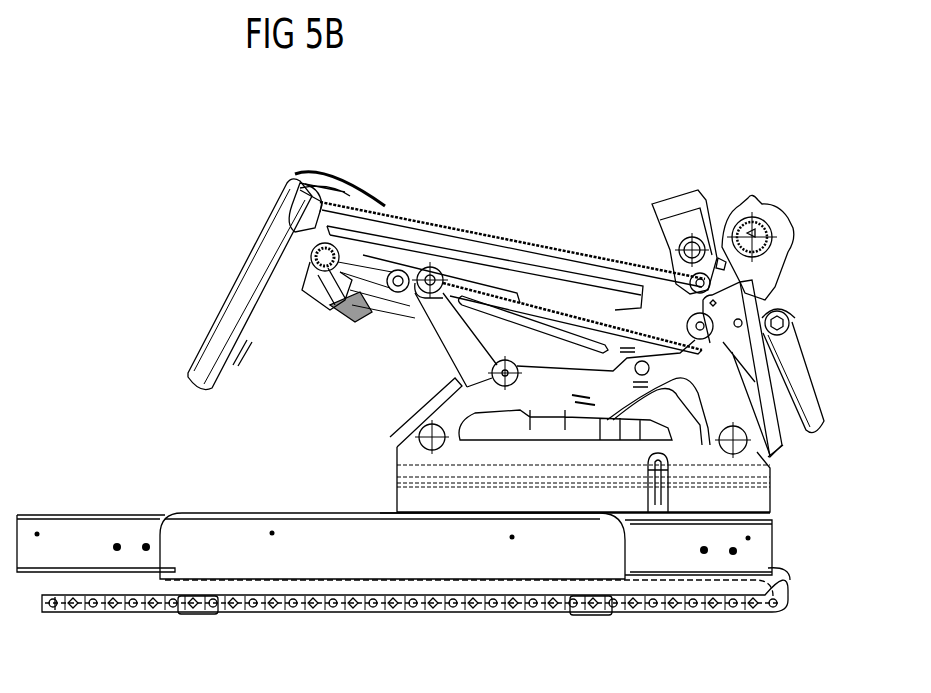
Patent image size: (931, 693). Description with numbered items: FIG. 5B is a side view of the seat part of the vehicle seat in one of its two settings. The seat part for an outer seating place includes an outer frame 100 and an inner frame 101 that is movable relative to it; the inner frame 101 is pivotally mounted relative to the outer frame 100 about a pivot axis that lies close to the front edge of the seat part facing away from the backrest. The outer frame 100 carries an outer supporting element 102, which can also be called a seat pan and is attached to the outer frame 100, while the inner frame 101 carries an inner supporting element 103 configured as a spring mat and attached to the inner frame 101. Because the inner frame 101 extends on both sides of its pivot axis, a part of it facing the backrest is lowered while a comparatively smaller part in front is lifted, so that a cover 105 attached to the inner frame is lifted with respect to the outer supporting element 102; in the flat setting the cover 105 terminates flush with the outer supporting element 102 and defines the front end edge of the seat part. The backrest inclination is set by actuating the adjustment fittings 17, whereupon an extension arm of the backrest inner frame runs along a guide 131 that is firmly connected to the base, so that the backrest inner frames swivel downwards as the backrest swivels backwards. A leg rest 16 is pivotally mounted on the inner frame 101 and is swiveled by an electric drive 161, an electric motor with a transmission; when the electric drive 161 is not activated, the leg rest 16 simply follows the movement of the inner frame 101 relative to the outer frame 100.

The leg rest 16 is at (222, 302).
The adjustment fitting 17 is at (763, 205).
The outer frame 100 is at (500, 280).
The inner frame 101 is at (563, 333).
The outer supporting element 102 is at (420, 217).
The inner supporting element 103 is at (455, 235).
The cover 105 is at (330, 173).
The guide 131 is at (803, 380).
The electric drive 161 is at (385, 305).